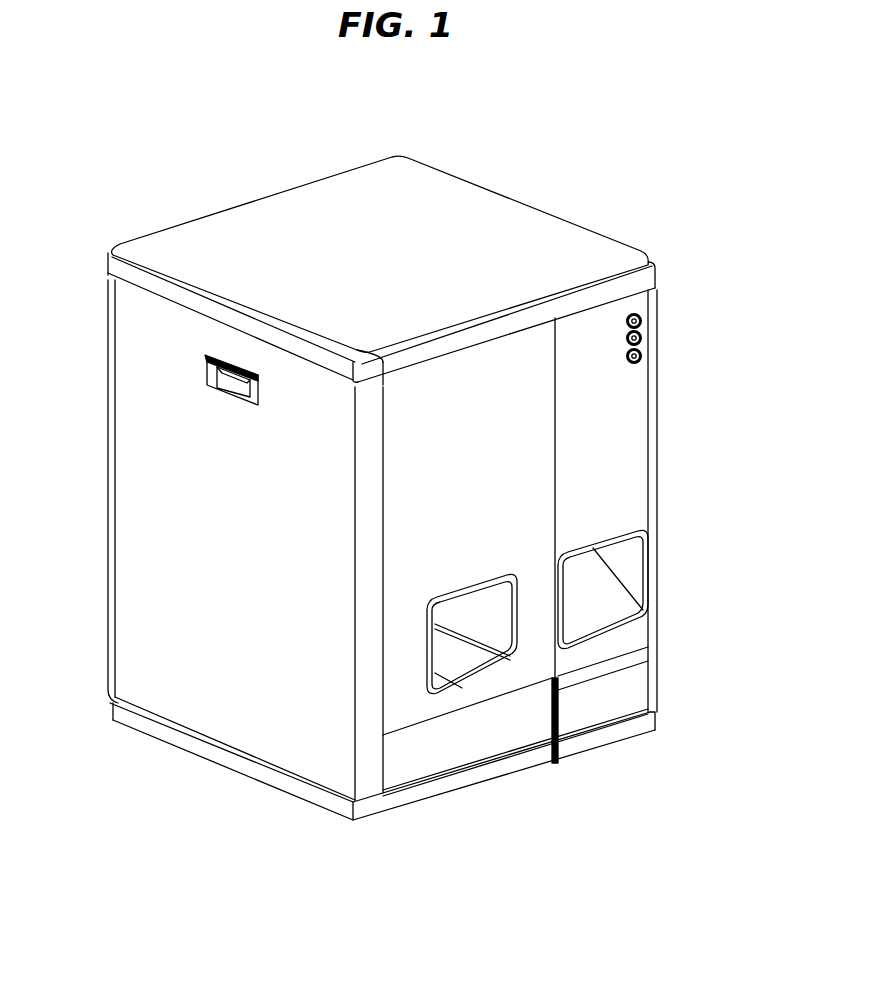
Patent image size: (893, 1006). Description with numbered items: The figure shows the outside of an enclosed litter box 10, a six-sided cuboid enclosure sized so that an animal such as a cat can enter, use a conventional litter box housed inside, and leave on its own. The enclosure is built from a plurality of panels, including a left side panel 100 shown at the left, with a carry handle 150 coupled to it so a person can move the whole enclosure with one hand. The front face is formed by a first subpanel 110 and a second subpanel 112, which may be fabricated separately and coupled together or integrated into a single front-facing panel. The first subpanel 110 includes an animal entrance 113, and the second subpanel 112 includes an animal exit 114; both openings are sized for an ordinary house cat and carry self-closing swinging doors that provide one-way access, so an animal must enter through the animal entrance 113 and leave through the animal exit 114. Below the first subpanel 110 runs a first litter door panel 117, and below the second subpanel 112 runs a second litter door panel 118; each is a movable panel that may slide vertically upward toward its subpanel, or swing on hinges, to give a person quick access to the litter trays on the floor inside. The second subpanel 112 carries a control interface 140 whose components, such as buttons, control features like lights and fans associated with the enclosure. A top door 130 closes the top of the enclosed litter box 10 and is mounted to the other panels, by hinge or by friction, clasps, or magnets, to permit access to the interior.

The enclosed litter box 10 is at (170, 196).
The left side panel 100 is at (268, 558).
The first subpanel 110 is at (498, 447).
The second subpanel 112 is at (597, 494).
The animal entrance 113 is at (482, 612).
The animal exit 114 is at (603, 596).
The first litter door panel 117 is at (448, 735).
The second litter door panel 118 is at (600, 697).
The top door 130 is at (447, 236).
The control interface 140 is at (642, 327).
The carry handle 150 is at (200, 368).